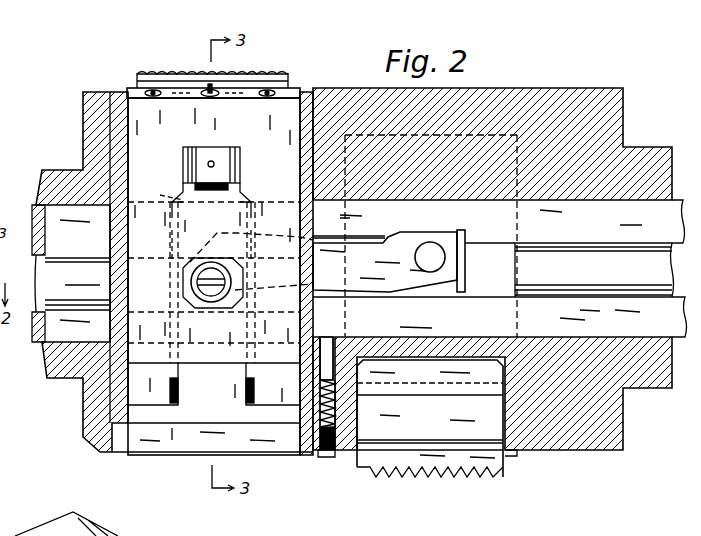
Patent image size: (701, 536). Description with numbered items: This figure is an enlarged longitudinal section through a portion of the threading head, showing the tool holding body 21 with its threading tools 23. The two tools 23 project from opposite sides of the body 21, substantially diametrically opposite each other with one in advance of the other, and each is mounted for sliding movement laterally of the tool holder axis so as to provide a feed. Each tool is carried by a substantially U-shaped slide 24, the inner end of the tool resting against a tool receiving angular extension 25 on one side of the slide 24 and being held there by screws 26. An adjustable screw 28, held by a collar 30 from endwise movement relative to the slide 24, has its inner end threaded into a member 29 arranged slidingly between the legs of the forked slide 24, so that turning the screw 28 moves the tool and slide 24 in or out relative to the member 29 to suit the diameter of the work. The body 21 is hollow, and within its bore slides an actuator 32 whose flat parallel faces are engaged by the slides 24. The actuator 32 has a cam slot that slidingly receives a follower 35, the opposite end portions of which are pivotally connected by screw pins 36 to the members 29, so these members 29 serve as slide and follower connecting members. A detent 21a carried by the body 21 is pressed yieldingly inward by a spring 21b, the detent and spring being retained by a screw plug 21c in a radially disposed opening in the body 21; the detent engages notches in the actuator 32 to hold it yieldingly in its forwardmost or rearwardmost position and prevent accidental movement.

The tool holding body 21 is at (572, 88).
The detent 21a is at (353, 337).
The spring 21b is at (333, 408).
The screw plug 21c is at (317, 458).
The threading tool 23 is at (285, 73).
The slide 24 is at (285, 395).
The tool receiving angular extension 25 is at (410, 392).
The screw 26 is at (153, 92).
The adjustable screw 28 is at (210, 90).
The slide and follower connecting member 29 is at (222, 350).
The collar 30 is at (240, 158).
The actuator 32 is at (360, 308).
The follower 35 is at (385, 262).
The screw pin 36 is at (211, 300).